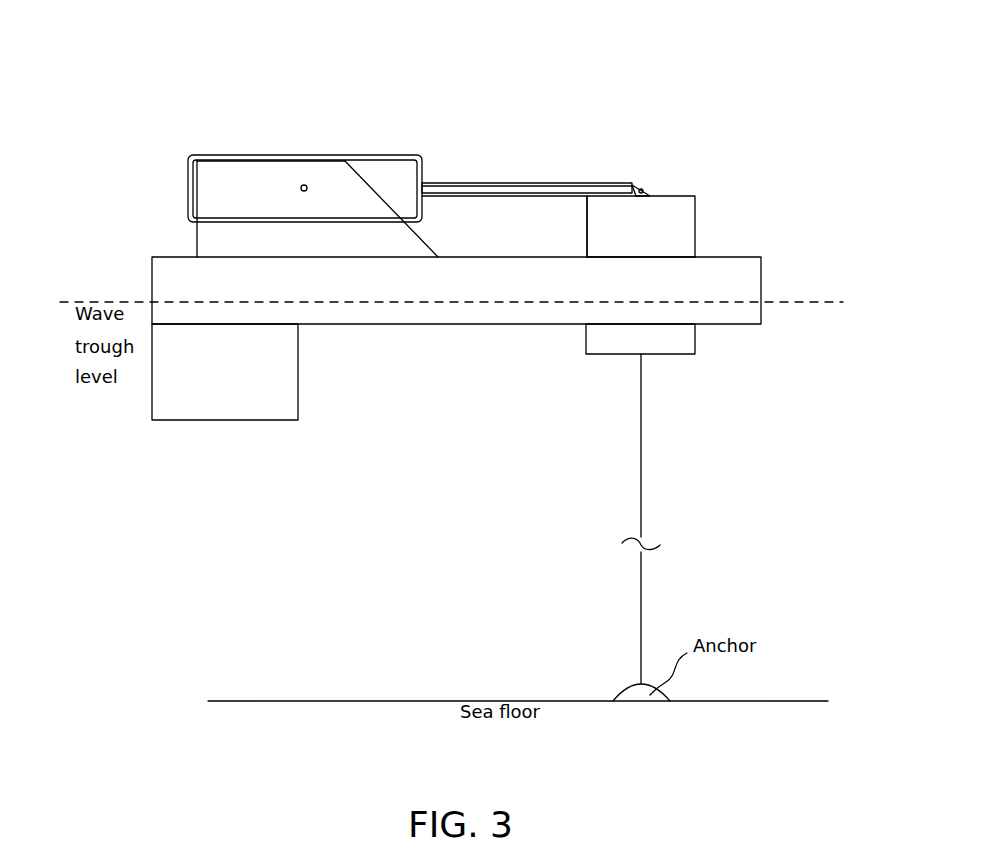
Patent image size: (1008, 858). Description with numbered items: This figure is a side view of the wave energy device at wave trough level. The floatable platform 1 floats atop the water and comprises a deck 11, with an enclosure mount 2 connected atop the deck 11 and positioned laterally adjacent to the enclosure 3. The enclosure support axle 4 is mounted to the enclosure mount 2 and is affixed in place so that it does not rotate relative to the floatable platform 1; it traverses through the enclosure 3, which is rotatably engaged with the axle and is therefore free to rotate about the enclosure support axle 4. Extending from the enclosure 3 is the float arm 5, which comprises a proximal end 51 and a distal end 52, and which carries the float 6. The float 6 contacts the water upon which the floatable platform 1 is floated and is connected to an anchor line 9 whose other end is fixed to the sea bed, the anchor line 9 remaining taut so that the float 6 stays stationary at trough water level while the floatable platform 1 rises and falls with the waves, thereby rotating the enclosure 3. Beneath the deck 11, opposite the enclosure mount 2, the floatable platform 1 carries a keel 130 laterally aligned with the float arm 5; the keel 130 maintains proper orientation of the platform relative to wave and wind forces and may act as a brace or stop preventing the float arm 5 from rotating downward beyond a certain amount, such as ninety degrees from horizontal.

The floatable platform 1 is at (793, 273).
The deck 11 is at (727, 257).
The enclosure mount 2 is at (185, 237).
The enclosure 3 is at (373, 158).
The enclosure support axle 4 is at (304, 185).
The float arm 5 is at (527, 188).
The proximal end 51 is at (430, 173).
The distal end 52 is at (640, 178).
The float 6 is at (672, 201).
The anchor line 9 is at (641, 467).
The keel 130 is at (210, 412).